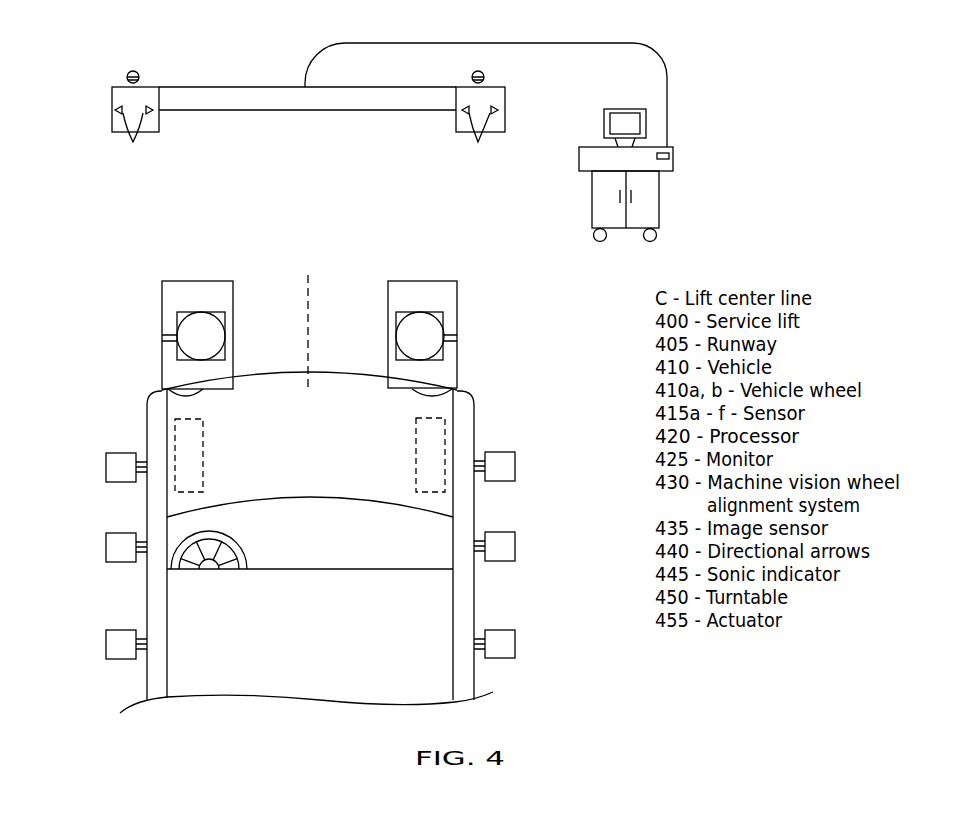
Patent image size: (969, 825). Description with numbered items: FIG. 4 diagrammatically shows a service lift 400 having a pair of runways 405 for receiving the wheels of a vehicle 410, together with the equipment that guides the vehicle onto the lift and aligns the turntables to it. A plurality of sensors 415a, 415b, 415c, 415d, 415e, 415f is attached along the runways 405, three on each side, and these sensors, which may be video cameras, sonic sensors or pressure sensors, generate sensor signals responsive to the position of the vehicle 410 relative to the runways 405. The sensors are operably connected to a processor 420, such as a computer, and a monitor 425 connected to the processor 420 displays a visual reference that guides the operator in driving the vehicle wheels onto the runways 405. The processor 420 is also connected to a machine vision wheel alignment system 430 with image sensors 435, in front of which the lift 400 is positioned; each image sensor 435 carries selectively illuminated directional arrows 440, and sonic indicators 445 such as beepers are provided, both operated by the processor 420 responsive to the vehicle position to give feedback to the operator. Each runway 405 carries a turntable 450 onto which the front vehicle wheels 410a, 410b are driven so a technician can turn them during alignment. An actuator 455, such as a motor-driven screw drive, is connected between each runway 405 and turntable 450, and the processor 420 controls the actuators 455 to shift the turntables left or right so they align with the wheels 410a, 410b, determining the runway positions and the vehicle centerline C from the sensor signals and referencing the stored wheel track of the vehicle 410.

The vehicle centerline C is at (310, 282).
The service lift 400 is at (599, 403).
The runway 405 is at (162, 367).
The vehicle 410 is at (187, 658).
The vehicle wheel 410a is at (175, 477).
The vehicle wheel 410b is at (445, 477).
The sensor 415a is at (106, 462).
The sensor 415b is at (515, 462).
The sensor 415c is at (106, 542).
The sensor 415d is at (515, 542).
The sensor 415e is at (106, 640).
The sensor 415f is at (515, 640).
The processor 420 is at (650, 197).
The monitor 425 is at (612, 108).
The machine vision wheel alignment system 430 is at (228, 48).
The image sensor 435 is at (120, 97).
The directional arrows 440 is at (133, 142).
The sonic indicator 445 is at (140, 76).
The turntable 450 is at (225, 348).
The actuator 455 is at (170, 338).